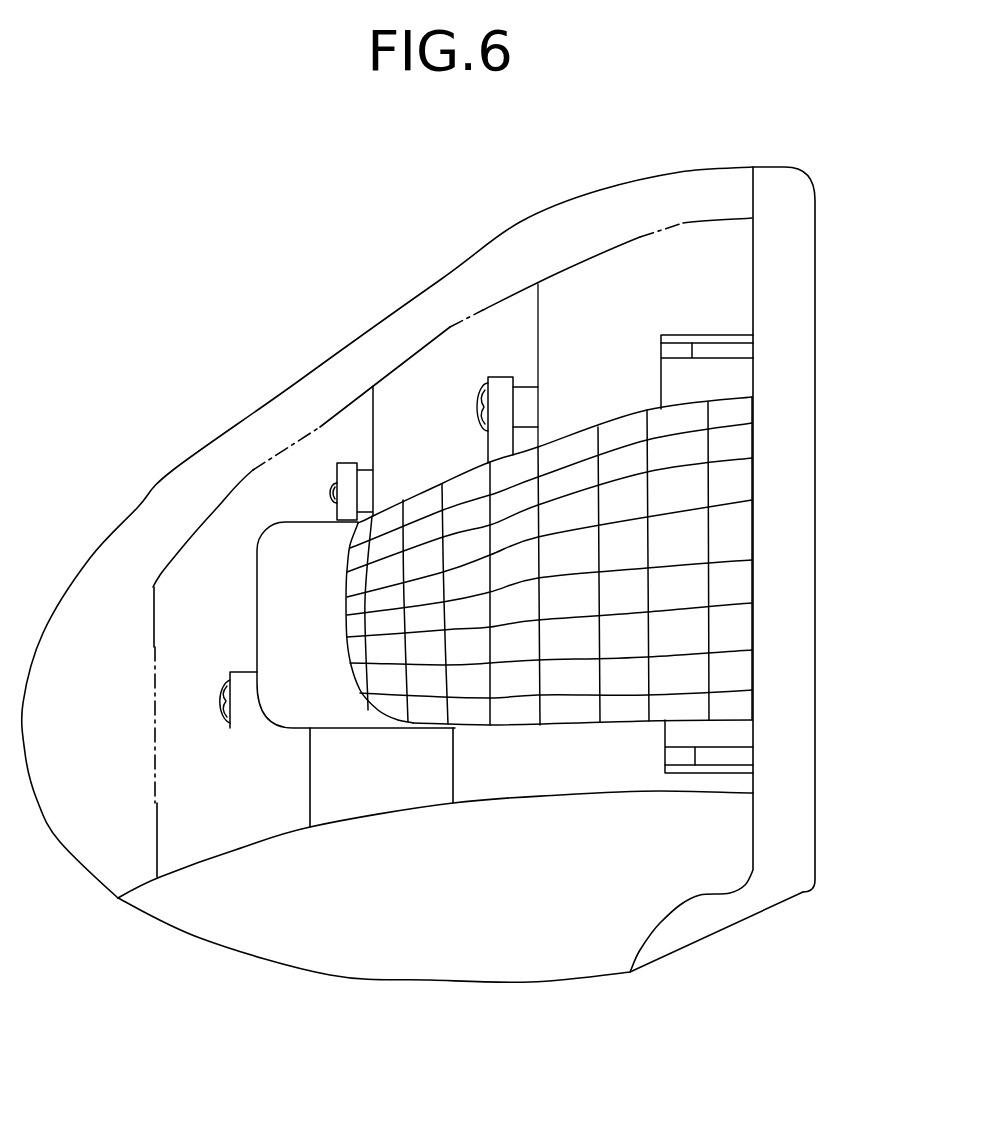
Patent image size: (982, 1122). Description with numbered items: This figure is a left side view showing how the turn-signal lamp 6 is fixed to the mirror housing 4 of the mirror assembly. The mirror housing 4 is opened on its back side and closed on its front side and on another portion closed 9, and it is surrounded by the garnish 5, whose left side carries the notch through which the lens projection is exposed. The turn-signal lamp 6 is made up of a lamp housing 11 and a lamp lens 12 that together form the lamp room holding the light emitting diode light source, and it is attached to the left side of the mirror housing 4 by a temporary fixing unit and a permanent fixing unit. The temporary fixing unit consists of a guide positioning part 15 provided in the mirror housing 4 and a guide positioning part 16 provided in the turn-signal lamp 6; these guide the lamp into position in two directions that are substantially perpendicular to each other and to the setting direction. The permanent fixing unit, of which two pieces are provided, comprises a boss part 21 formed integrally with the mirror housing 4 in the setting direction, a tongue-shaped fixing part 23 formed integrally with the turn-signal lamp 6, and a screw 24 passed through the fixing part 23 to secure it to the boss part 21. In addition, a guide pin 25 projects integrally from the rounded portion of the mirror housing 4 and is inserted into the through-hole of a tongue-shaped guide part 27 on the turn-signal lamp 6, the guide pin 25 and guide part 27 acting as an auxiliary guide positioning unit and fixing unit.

The mirror housing 4 is at (418, 980).
The garnish 5 is at (133, 507).
The turn-signal lamp 6 is at (757, 482).
The portion closed 9 is at (597, 280).
The lamp housing 11 is at (282, 588).
The lamp lens 12 is at (733, 535).
The guide positioning part 15 is at (737, 350).
The guide positioning part 16 is at (717, 330).
The boss part 21 is at (527, 397).
The fixing part 23 is at (492, 375).
The screw 24 is at (477, 407).
The guide pin 25 is at (330, 492).
The guide part 27 is at (340, 460).